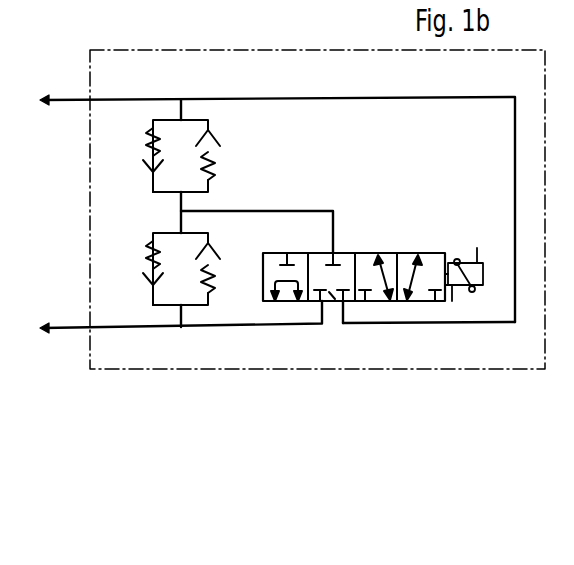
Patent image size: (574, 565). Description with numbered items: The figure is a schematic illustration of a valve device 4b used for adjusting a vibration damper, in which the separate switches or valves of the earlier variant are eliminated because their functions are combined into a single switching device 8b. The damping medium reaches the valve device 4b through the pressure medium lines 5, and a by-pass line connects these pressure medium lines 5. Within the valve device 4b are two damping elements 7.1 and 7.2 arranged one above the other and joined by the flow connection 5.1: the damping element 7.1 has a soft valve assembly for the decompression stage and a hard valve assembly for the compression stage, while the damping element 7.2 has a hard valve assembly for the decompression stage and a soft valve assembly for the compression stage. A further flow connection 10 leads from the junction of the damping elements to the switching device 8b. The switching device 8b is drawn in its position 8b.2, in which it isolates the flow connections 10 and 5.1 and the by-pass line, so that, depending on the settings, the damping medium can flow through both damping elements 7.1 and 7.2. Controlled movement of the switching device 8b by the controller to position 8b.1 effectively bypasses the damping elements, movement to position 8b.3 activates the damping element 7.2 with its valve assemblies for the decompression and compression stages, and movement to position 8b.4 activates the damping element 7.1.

The valve device 4b is at (90, 211).
The pressure medium line 5 is at (66, 100).
The flow connection 5.1 is at (181, 218).
The damping element 7.1 is at (191, 149).
The damping element 7.2 is at (185, 257).
The flow connection 10 is at (241, 211).
The switching device 8b is at (361, 253).
The switching device position 8b.1 is at (265, 301).
The switching device position 8b.2 is at (337, 301).
The switching device position 8b.3 is at (373, 301).
The switching device position 8b.4 is at (422, 301).